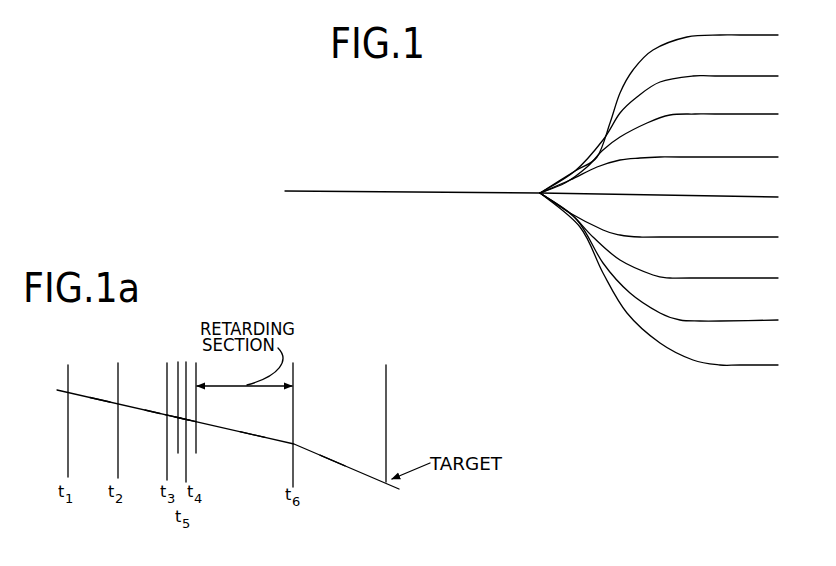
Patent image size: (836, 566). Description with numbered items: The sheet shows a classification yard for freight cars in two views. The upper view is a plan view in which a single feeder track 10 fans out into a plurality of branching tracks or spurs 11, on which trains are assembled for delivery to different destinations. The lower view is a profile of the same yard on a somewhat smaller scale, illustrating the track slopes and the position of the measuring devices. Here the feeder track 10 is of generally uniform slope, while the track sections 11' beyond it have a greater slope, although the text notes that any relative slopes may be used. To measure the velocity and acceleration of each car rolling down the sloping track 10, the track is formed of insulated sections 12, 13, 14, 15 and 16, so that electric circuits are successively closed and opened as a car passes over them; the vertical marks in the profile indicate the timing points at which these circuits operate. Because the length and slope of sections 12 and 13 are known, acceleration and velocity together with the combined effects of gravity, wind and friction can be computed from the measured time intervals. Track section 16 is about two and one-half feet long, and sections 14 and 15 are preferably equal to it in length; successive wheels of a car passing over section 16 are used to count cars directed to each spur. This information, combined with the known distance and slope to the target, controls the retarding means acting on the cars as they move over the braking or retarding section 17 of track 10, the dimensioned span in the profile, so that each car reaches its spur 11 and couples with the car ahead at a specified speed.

In FIG. 1, the feeder track 10 is at (384, 197).
In FIG. 1a, the feeder track 10 is at (227, 432).
In FIG. 1, the branching tracks or spurs 11 is at (659, 184).
In FIG. 1a, the track sections 11' is at (340, 482).
In FIG. 1a, the insulated track section 12 is at (100, 403).
In FIG. 1a, the insulated track section 13 is at (152, 412).
In FIG. 1a, the insulated track section 14 is at (172, 414).
In FIG. 1a, the insulated track section 15 is at (182, 419).
In FIG. 1a, the insulated track section 16 is at (188, 420).
In FIG. 1a, the braking or retarding section 17 is at (252, 438).